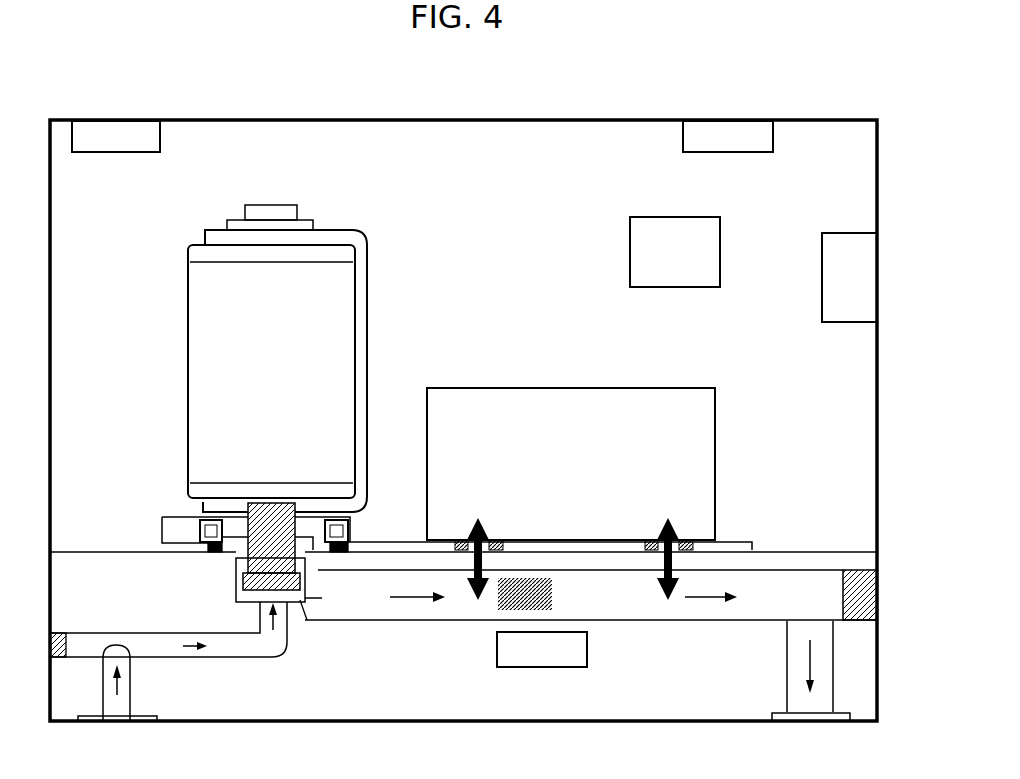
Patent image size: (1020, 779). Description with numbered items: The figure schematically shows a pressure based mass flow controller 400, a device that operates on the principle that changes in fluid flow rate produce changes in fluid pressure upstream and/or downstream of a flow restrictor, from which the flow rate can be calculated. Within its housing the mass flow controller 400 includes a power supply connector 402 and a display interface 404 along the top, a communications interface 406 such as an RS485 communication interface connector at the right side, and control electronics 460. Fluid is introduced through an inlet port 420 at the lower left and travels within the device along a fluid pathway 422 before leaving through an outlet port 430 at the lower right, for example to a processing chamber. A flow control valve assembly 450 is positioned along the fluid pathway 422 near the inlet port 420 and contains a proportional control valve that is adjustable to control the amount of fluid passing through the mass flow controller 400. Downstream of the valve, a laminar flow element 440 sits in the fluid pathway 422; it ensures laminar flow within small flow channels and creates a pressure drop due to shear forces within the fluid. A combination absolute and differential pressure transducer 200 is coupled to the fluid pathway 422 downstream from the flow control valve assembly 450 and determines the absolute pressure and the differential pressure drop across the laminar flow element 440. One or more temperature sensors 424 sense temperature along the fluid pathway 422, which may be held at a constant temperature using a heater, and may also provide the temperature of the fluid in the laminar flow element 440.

The pressure based mass flow controller 400 is at (108, 86).
The power supply connector 402 is at (116, 136).
The display interface 404 is at (728, 136).
The communications interface 406 is at (849, 277).
The control electronics 460 is at (675, 252).
The flow control valve assembly 450 is at (264, 403).
The combination absolute and differential pressure transducer 200 is at (571, 464).
The laminar flow element 440 is at (554, 603).
The fluid pathway 422 is at (174, 638).
The temperature sensor 424 is at (542, 649).
The inlet port 420 is at (117, 725).
The outlet port 430 is at (810, 722).